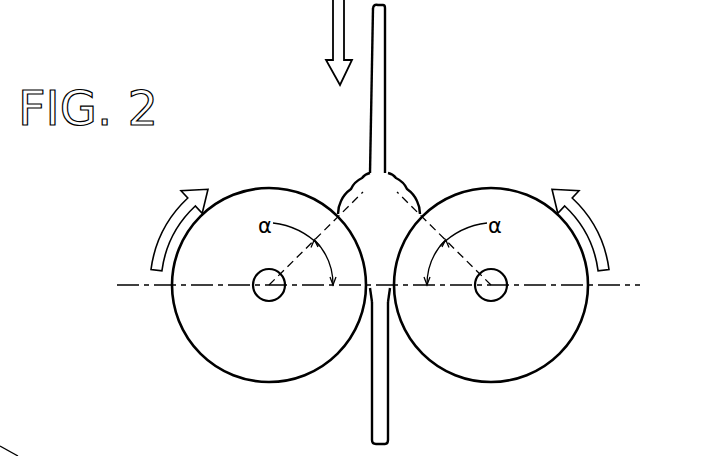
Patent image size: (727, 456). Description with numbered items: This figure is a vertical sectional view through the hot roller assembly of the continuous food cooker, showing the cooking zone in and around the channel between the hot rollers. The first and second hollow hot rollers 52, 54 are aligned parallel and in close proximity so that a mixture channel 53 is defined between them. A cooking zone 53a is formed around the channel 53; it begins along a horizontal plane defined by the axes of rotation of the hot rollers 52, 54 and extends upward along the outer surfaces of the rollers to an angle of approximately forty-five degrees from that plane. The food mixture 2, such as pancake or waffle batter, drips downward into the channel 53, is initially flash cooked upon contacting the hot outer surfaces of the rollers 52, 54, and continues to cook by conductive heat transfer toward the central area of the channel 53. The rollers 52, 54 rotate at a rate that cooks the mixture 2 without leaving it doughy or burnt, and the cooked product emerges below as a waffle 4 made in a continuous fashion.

The food mixture 2 is at (380, 53).
The waffle 4 is at (384, 408).
The first hollow hot roller 52 is at (231, 360).
The mixture channel 53 is at (381, 289).
The cooking zone 53a is at (383, 198).
The second hollow hot roller 54 is at (537, 358).